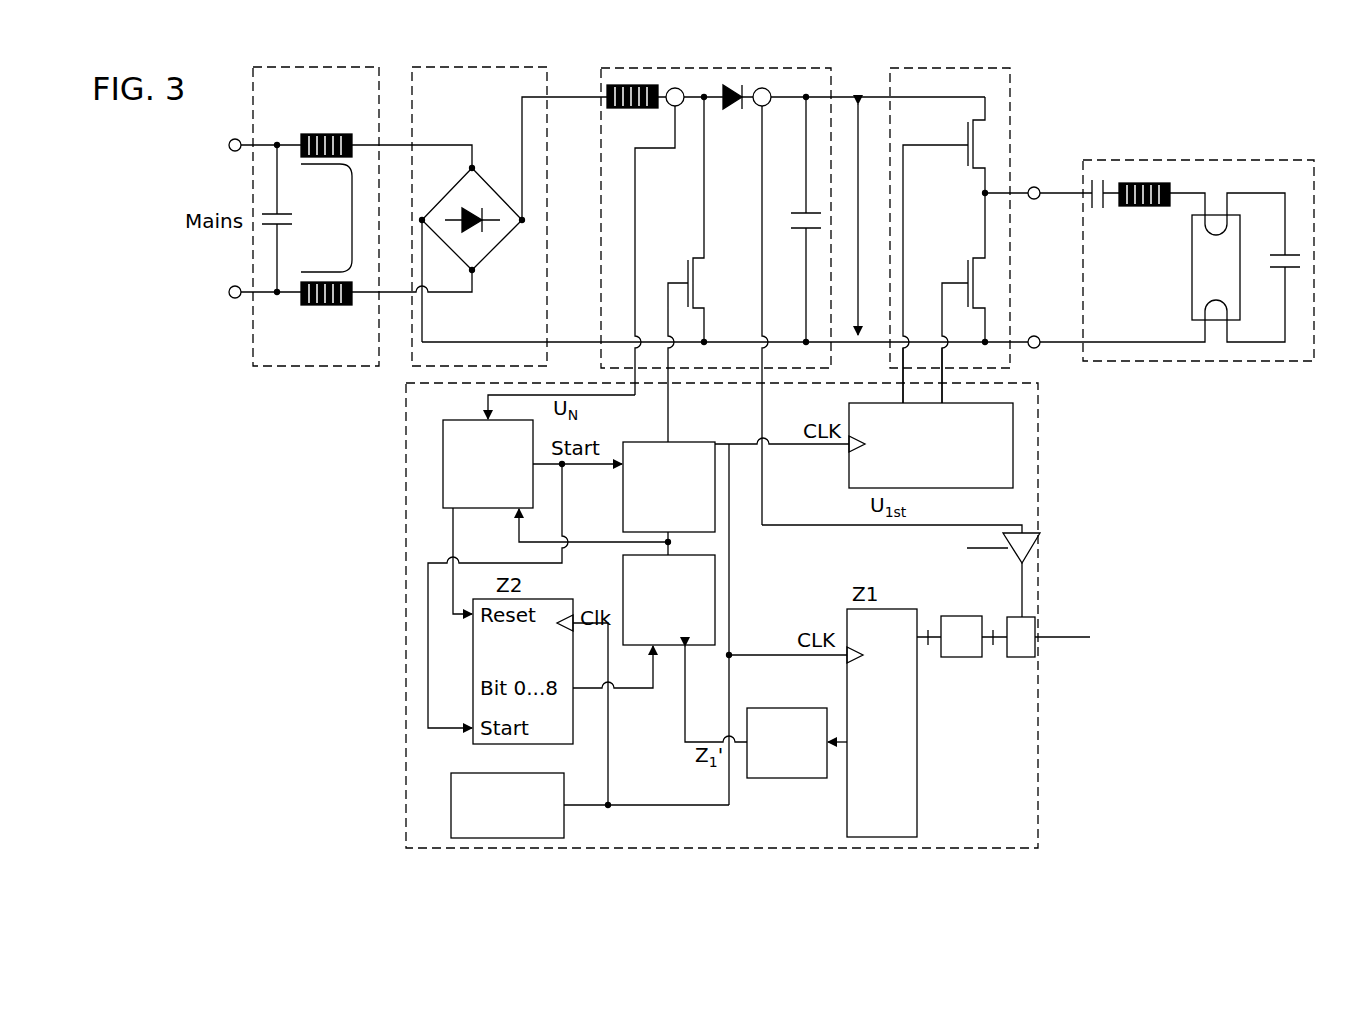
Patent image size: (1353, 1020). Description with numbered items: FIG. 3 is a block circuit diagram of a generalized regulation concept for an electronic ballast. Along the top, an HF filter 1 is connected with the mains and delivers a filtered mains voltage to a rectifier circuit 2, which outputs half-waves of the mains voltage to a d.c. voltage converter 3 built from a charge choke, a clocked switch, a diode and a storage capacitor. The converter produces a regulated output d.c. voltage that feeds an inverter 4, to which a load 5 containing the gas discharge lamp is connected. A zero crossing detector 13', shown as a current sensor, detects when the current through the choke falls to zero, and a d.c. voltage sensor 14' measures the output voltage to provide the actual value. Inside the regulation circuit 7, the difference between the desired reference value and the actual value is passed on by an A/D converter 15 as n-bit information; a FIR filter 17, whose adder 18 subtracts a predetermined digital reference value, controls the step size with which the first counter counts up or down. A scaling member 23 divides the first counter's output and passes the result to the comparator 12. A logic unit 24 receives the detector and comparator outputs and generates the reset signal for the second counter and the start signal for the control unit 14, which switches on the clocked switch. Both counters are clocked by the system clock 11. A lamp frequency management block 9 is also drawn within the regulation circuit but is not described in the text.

The HF filter 1 is at (335, 366).
The rectifier circuit 2 is at (547, 90).
The d.c. voltage converter 3 is at (831, 90).
The inverter 4 is at (1010, 90).
The load 5 is at (1213, 160).
The regulation circuit 7 is at (1038, 403).
The lamp frequency management unit 9 is at (1013, 420).
The system clock 11 is at (564, 818).
The comparator 12 is at (623, 590).
The zero crossing detector 13' is at (694, 68).
The d.c. voltage sensor 14' is at (781, 68).
The control unit 14 is at (675, 461).
The A/D converter 15 is at (1037, 535).
The FIR filter 17 is at (963, 657).
The adder 18 is at (1022, 657).
The scaling member 23 is at (820, 708).
The logic unit 24 is at (443, 460).